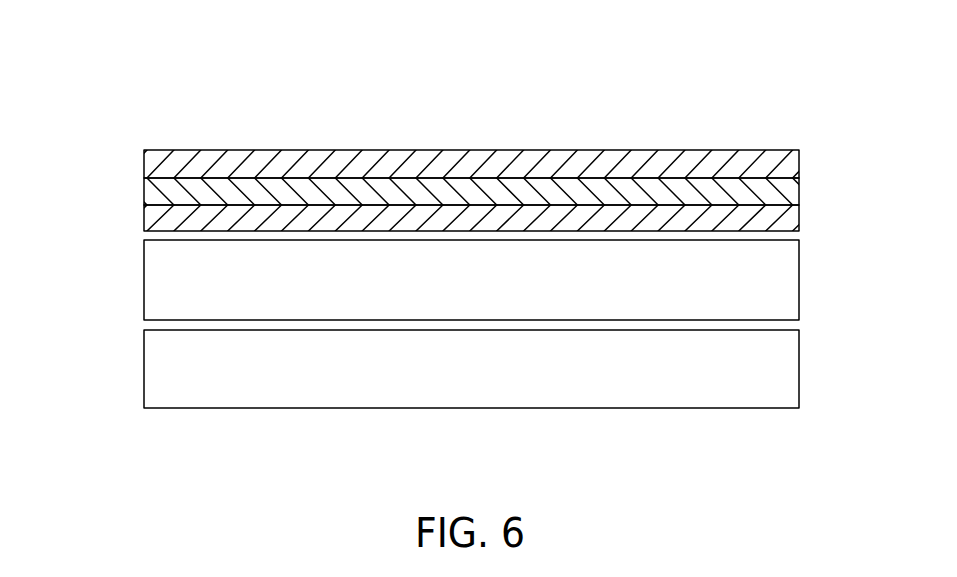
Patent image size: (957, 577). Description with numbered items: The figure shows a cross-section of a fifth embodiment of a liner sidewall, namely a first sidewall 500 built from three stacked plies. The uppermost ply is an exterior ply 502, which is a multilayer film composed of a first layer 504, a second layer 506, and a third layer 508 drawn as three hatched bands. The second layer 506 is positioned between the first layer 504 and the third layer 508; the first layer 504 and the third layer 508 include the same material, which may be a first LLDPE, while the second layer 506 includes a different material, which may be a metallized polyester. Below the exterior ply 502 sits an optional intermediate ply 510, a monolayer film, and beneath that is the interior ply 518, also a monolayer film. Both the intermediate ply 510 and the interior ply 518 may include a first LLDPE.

The first sidewall 500 is at (535, 107).
The exterior ply 502 is at (133, 150).
The first layer 504 is at (788, 170).
The second layer 506 is at (788, 198).
The third layer 508 is at (788, 225).
The intermediate ply 510 is at (133, 240).
The interior ply 518 is at (133, 330).